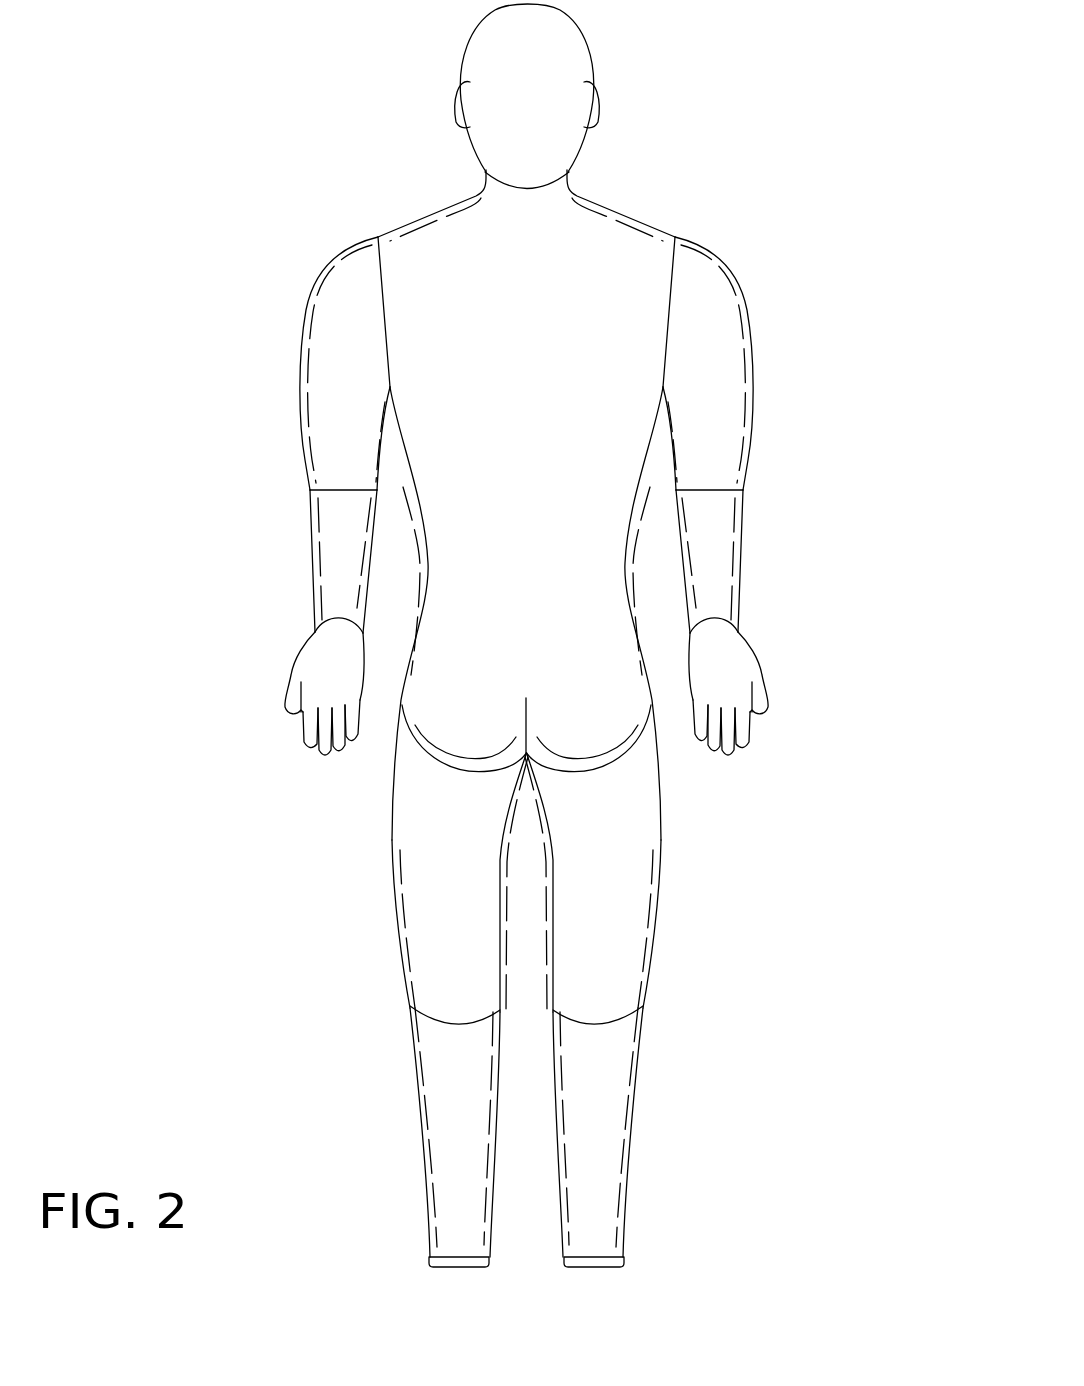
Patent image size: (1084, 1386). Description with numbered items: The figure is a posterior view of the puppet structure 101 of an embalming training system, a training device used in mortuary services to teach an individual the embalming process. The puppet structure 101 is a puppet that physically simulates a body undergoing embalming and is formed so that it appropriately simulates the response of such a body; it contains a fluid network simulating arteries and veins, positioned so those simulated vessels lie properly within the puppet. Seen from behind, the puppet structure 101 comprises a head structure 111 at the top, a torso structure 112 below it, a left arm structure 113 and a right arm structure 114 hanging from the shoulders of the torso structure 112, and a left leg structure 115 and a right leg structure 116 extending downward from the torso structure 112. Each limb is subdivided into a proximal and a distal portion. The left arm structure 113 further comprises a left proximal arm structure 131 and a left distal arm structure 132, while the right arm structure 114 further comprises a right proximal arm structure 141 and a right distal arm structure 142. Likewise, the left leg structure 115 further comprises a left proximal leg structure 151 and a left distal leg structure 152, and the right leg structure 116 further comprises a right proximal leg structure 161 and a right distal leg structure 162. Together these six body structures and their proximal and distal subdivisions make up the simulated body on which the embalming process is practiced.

The puppet structure 101 is at (326, 105).
The head structure 111 is at (583, 52).
The torso structure 112 is at (608, 257).
The left arm structure 113 is at (163, 337).
The right arm structure 114 is at (850, 335).
The left leg structure 115 is at (210, 902).
The right leg structure 116 is at (783, 902).
The left proximal arm structure 131 is at (327, 370).
The left distal arm structure 132 is at (325, 543).
The right proximal arm structure 141 is at (752, 370).
The right distal arm structure 142 is at (738, 557).
The left proximal leg structure 151 is at (420, 922).
The left distal leg structure 152 is at (435, 1072).
The right proximal leg structure 161 is at (650, 928).
The right distal leg structure 162 is at (637, 1060).